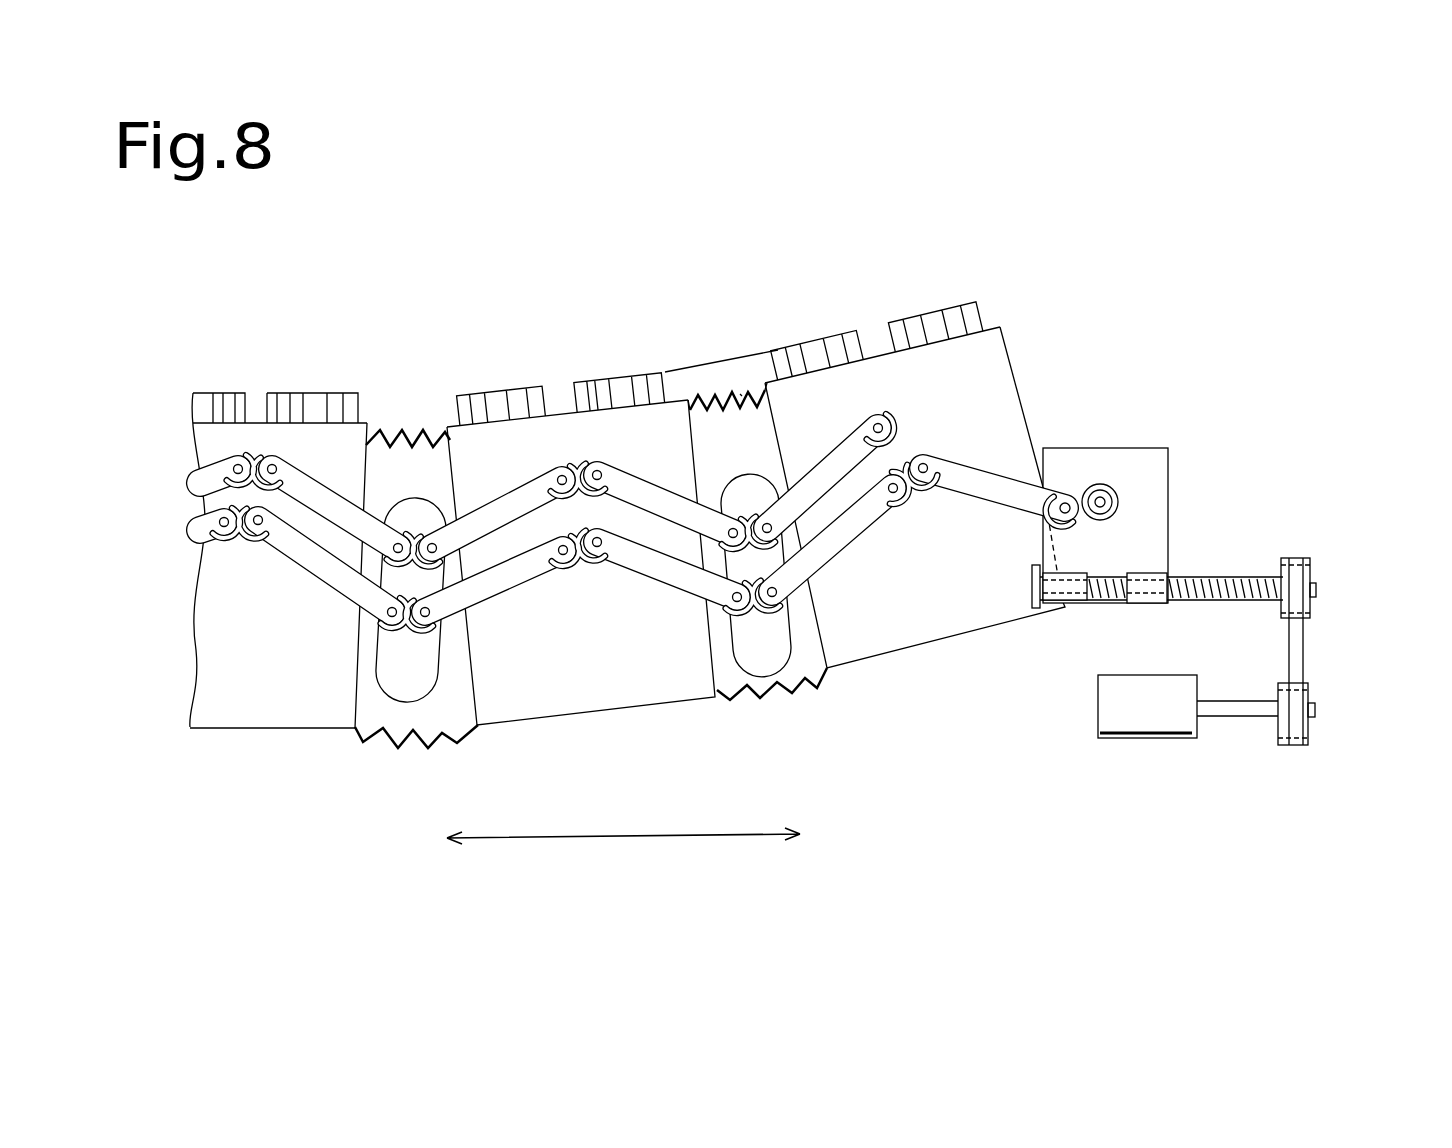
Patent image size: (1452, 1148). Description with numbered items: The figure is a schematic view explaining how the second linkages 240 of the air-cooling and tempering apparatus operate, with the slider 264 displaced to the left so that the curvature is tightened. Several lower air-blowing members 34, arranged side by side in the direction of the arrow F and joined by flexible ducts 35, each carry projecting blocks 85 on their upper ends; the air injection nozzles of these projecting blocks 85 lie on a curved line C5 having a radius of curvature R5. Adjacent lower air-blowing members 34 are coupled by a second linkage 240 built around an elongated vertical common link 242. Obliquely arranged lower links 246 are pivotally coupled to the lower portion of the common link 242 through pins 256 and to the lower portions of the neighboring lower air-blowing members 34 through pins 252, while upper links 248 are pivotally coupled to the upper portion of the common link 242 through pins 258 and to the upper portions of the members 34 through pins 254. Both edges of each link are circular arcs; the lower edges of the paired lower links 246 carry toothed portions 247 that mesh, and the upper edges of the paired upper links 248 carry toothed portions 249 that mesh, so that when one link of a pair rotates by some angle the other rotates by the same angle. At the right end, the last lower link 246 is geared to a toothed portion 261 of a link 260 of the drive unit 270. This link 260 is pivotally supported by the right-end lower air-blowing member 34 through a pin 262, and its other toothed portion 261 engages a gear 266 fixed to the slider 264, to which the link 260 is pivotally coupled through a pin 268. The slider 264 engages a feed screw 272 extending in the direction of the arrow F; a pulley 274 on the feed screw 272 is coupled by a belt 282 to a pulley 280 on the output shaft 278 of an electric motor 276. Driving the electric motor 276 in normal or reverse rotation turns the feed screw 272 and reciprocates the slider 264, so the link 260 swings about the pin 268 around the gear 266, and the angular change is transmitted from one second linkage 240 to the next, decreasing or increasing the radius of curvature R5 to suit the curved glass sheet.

The lower air-blowing member 34 is at (250, 440).
The flexible duct 35 is at (415, 436).
The projecting block 85 is at (205, 403).
The second linkage 240 is at (340, 614).
The common link 242 is at (412, 683).
The lower link 246 is at (210, 532).
The toothed portion 247 is at (552, 562).
The upper link 248 is at (220, 470).
The toothed portion 249 is at (560, 466).
The pin 252 is at (597, 553).
The pin 254 is at (558, 468).
The pin 256 is at (720, 612).
The pin 258 is at (717, 470).
The link 260 is at (1003, 490).
The toothed portion 261 is at (930, 460).
The pin 262 is at (928, 485).
The slider 264 is at (1145, 530).
The gear 266 is at (1120, 503).
The pin 268 is at (1062, 496).
The drive unit 270 is at (1229, 598).
The feed screw 272 is at (1250, 602).
The pulley 274 is at (1313, 572).
The electric motor 276 is at (1145, 720).
The output shaft 278 is at (1248, 718).
The pulley 280 is at (1310, 740).
The belt 282 is at (1297, 655).
The radius of curvature R5 is at (717, 348).
The curved line C5 is at (742, 394).
The arrow F is at (760, 842).